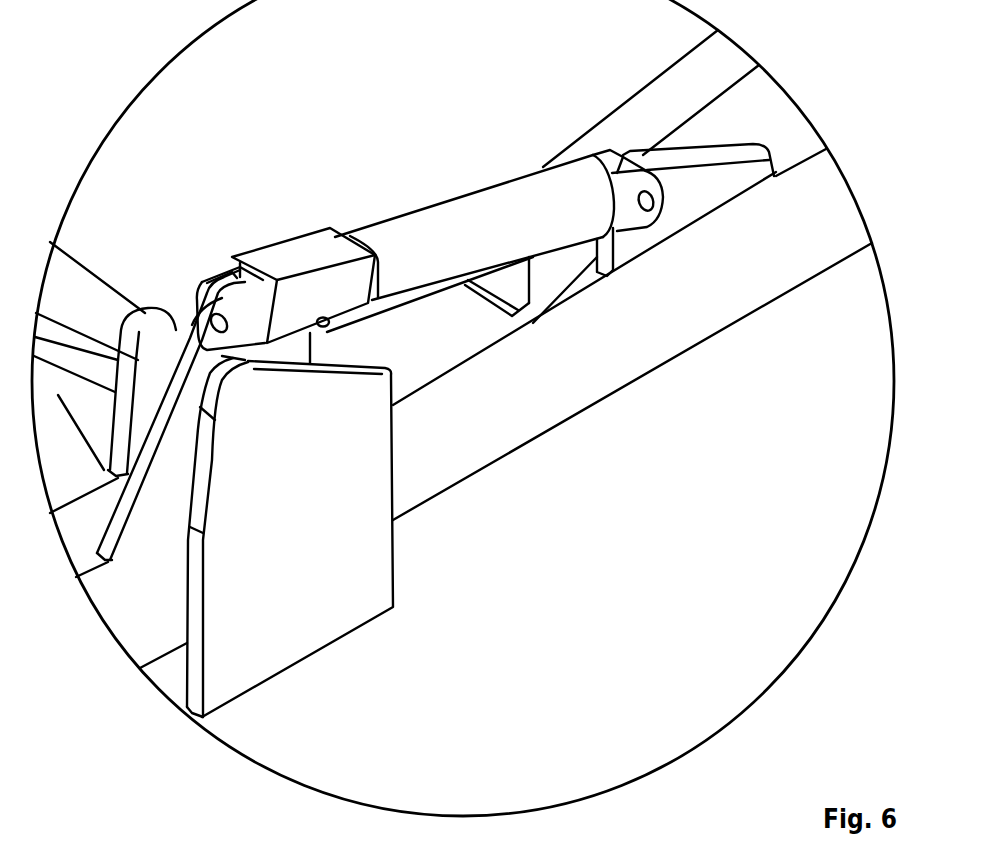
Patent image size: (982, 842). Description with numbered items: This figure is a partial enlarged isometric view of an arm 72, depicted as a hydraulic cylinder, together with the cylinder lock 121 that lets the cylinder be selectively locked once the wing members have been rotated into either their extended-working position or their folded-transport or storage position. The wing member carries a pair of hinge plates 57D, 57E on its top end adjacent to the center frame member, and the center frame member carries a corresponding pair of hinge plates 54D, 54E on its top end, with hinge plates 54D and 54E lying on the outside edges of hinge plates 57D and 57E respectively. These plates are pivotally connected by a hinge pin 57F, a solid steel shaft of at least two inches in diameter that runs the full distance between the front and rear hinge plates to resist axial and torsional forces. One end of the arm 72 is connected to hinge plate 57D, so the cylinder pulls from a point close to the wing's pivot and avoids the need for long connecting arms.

The hinge pin 57F is at (75, 297).
The hinge plate 54E is at (143, 313).
The hinge plate 57E is at (176, 312).
The cylinder lock 121 is at (260, 206).
The arm 72 is at (500, 187).
The hinge plate 54D is at (375, 552).
The hinge plate 57D is at (163, 567).